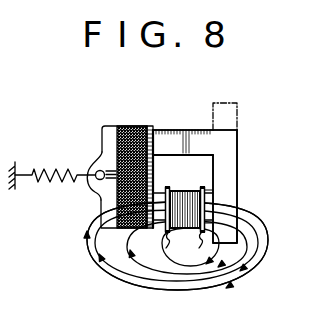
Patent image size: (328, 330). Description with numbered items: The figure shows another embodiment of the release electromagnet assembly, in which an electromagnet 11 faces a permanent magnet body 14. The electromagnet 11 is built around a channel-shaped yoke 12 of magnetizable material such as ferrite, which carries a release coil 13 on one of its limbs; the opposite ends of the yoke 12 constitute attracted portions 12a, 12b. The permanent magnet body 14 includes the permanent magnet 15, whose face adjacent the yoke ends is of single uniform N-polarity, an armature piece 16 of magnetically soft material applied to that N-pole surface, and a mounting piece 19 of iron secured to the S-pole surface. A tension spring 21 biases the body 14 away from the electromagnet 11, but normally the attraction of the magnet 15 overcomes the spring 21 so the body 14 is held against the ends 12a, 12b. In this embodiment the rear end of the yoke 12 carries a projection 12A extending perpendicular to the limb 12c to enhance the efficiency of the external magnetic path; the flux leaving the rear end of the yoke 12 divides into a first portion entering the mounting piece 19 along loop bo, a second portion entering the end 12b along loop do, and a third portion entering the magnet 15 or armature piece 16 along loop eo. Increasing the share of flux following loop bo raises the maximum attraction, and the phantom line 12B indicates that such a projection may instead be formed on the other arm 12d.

The electromagnet 11 is at (248, 145).
The yoke 12 is at (228, 172).
The attracted portion (end of yoke) 12a is at (155, 142).
The attracted portion (end of yoke) 12b is at (156, 188).
The limb of yoke 12c is at (208, 200).
The arm of yoke 12d is at (200, 137).
The projection 12A is at (235, 238).
The phantom line projection 12B is at (232, 103).
The release coil 13 is at (183, 232).
The permanent magnet body 14 is at (90, 136).
The permanent magnet 15 is at (131, 131).
The armature piece 16 is at (148, 127).
The mounting piece 19 is at (100, 199).
The tension spring 21 is at (57, 163).
The flux loop d0 do is at (265, 258).
The flux loop e0 eo is at (135, 281).
The flux loop b0 bo is at (188, 290).